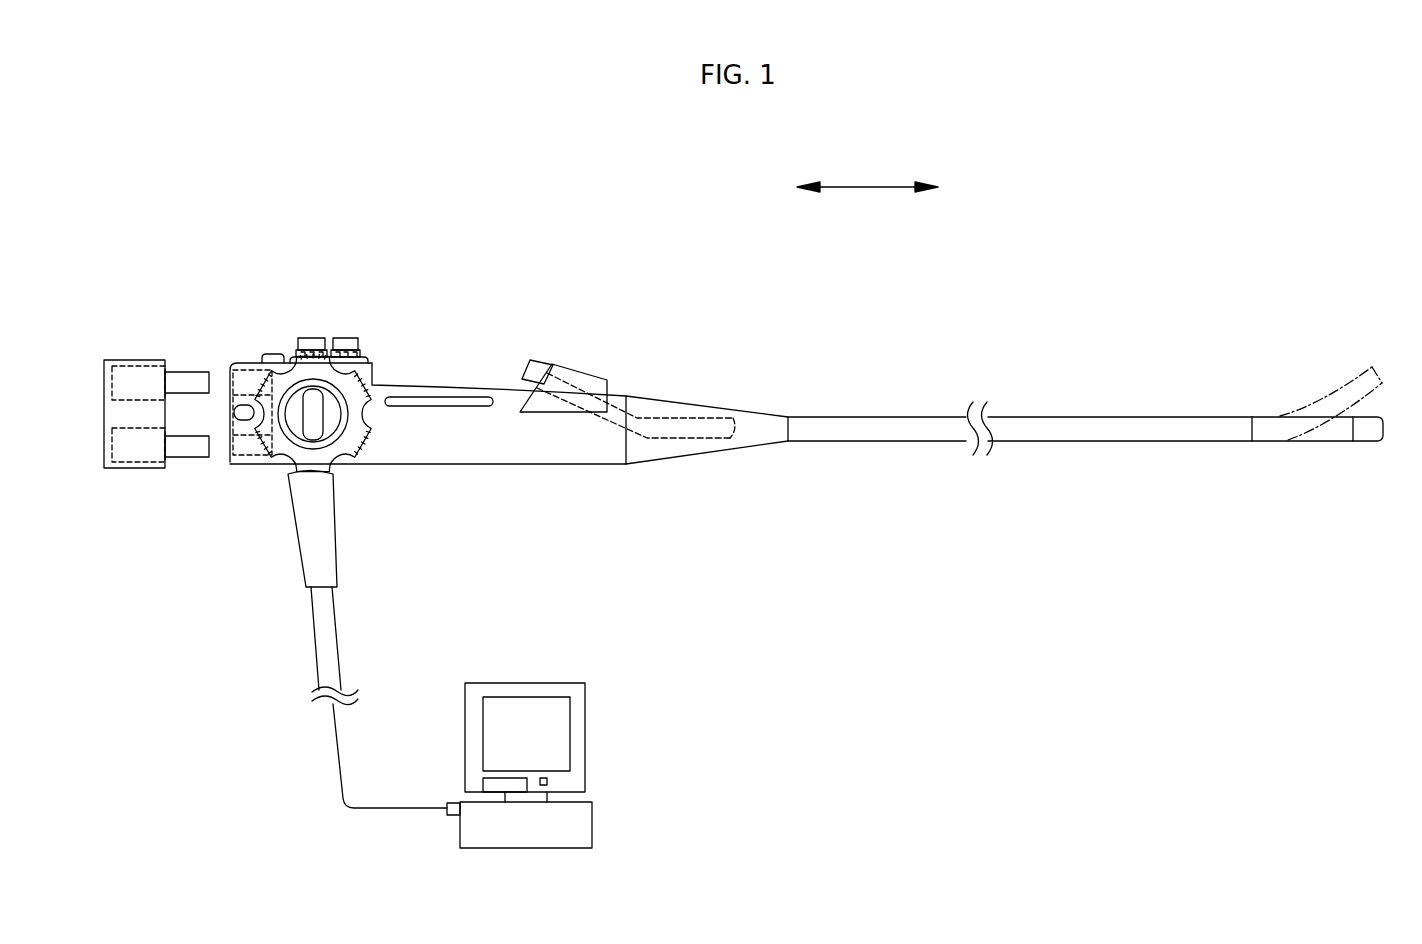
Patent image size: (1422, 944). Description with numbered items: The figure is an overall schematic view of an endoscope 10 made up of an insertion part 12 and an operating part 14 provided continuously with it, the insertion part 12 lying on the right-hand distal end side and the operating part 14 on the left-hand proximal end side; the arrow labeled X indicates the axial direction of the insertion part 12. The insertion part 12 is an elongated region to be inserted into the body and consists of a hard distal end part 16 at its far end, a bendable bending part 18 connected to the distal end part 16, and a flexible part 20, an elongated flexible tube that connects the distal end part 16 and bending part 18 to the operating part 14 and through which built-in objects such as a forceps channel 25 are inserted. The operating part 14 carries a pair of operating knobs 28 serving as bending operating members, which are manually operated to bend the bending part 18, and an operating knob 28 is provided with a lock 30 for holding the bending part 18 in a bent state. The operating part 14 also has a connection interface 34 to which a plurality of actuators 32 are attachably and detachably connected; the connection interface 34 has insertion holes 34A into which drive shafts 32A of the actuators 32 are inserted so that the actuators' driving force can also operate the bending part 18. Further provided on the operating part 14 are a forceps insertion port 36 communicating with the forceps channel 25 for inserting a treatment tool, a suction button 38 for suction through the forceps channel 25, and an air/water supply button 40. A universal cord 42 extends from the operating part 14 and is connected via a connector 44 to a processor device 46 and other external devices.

The endoscope 10 is at (1256, 224).
The insertion part 12 is at (1385, 307).
The operating part 14 is at (789, 307).
The distal end part 16 is at (1374, 429).
The bending part 18 is at (1332, 437).
The flexible part 20 is at (1088, 441).
The forceps channel 25 is at (585, 380).
The operating knob 28 is at (352, 460).
The lock 30 is at (300, 430).
The actuator 32 is at (119, 446).
The drive shaft 32A is at (190, 448).
The connection interface 34 is at (227, 400).
The insertion hole 34A is at (230, 452).
The forceps insertion port 36 is at (528, 366).
The suction button 38 is at (306, 340).
The air/water supply button 40 is at (359, 342).
The universal cord 42 is at (330, 627).
The connector 44 is at (452, 803).
The processor device 46 is at (581, 717).